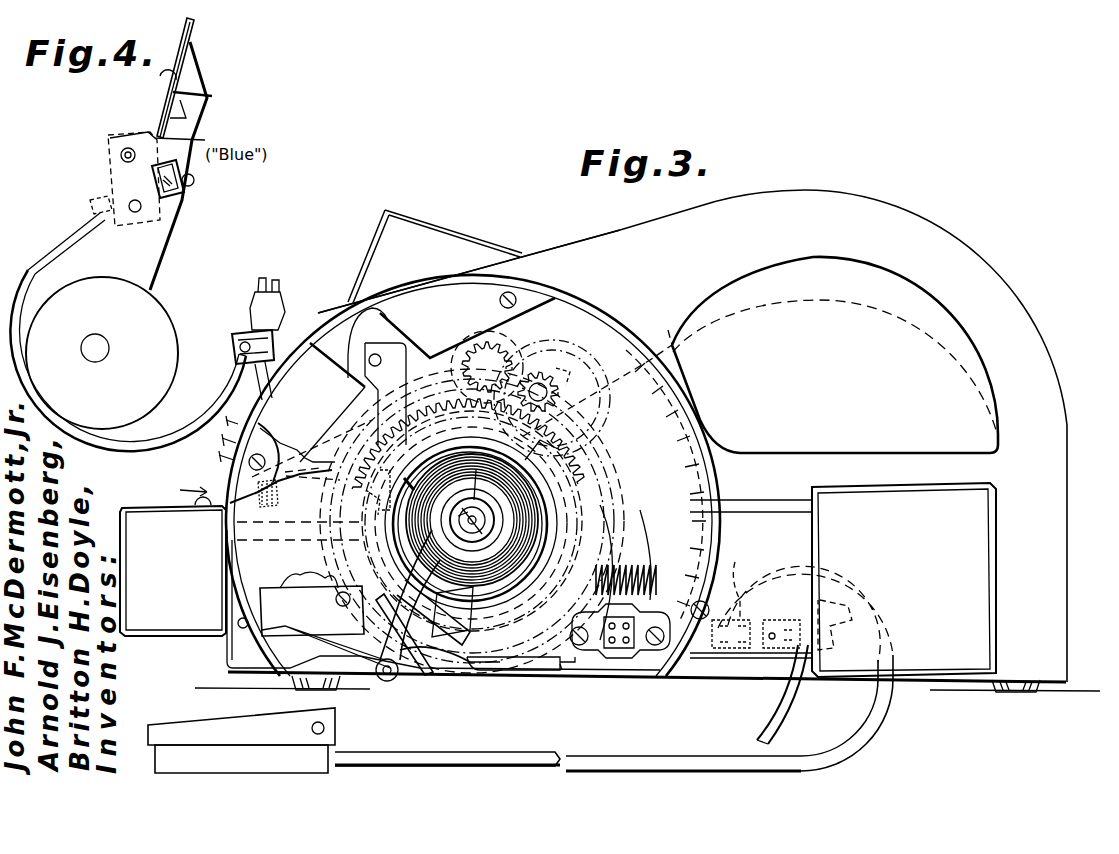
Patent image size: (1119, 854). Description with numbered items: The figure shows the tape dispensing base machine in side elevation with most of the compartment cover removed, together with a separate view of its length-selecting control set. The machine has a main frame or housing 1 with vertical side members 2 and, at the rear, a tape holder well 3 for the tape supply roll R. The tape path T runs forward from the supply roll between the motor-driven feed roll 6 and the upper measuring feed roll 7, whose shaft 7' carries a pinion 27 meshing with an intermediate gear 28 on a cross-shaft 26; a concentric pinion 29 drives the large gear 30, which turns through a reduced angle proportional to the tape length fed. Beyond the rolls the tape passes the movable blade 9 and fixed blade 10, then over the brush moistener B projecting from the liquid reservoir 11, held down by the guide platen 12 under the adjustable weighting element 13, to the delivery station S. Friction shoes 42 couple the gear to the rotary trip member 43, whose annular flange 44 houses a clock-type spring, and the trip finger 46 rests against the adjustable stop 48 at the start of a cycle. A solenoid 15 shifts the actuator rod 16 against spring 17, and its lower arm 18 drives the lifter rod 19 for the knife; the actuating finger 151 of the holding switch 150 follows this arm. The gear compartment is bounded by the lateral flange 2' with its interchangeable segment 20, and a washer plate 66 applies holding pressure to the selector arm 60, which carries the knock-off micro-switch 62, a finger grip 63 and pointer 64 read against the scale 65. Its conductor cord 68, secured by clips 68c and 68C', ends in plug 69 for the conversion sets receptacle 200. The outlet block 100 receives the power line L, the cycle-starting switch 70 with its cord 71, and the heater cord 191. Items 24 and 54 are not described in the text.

In FIG. 3, the main frame or housing 1 is at (1030, 288).
In FIG. 3, the vertical side members 2 is at (474, 256).
In FIG. 3, the tape holder well 3 is at (920, 292).
In FIG. 3, the tape supply roll R is at (850, 316).
In FIG. 3, the compartment-flange segment 20 is at (495, 280).
In FIG. 3, the intermediate gear 28 is at (492, 350).
In FIG. 3, the upper feed roll 7 is at (427, 380).
In FIG. 3, the shaft of upper feed roll 7' is at (416, 368).
In FIG. 3, the pinion 29 is at (530, 380).
In FIG. 3, the cross-shaft 26 is at (548, 382).
In FIG. 3, the tape path T is at (178, 470).
In FIG. 3, the dial scale 54 is at (665, 485).
In FIG. 3, the arcuate scale 65 is at (700, 470).
In FIG. 3, the solenoid 15 is at (898, 492).
In FIG. 4, the length selector arm 60 is at (116, 119).
In FIG. 3, the length selector arm 60 is at (690, 456).
In FIG. 3, the large gear 30 is at (578, 440).
In FIG. 3, the spring-pressed shoes 42 is at (542, 461).
In FIG. 3, the motor-driven feed roll 6 is at (596, 490).
In FIG. 3, the washer plate 66 is at (692, 527).
In FIG. 3, the adjustable weighting element 13 is at (262, 438).
In FIG. 3, the lifter rod 19 is at (385, 400).
In FIG. 3, the movable blade 9 is at (397, 482).
In FIG. 3, the guide platen 12 is at (222, 455).
In FIG. 3, the delivery station S is at (186, 493).
In FIG. 3, the fixed blade 10 is at (384, 507).
In FIG. 3, the brush moistener B is at (262, 512).
In FIG. 3, the rotary trip member 43 is at (537, 537).
In FIG. 3, the annular flange 44 is at (512, 580).
In FIG. 3, the spring 17 is at (622, 564).
In FIG. 3, the cycle-starting switch 70 is at (650, 576).
In FIG. 3, the lateral flange 2' is at (426, 600).
In FIG. 3, the holding switch 150 is at (312, 604).
In FIG. 3, the actuator rod 16 is at (604, 598).
In FIG. 3, the connection cord 71 is at (740, 590).
In FIG. 3, the liquid reservoir 11 is at (166, 618).
In FIG. 3, the screw 24 is at (244, 628).
In FIG. 3, the actuating finger 151 is at (330, 653).
In FIG. 3, the lower arm 18 is at (402, 686).
In FIG. 3, the trip finger 46 is at (433, 640).
In FIG. 3, the adjustable stop 48 is at (480, 673).
In FIG. 3, the conversion sets receptacle 200 is at (610, 655).
In FIG. 3, the outlet block 100 is at (742, 660).
In FIG. 3, the A.C. power line L is at (834, 650).
In FIG. 3, the heater conductor cord 191 is at (773, 712).
In FIG. 3, the pinion 27 is at (468, 515).
In FIG. 4, the finger grip 63 is at (185, 32).
In FIG. 4, the length-selecting pointer 64 is at (172, 96).
In FIG. 4, the knock-off micro-switch 62 is at (106, 138).
In FIG. 4, the flexible conductor cord 68 is at (55, 232).
In FIG. 4, the cord-container clip 68C' is at (191, 191).
In FIG. 4, the prong-type plug 69 is at (250, 312).
In FIG. 4, the clip 68c is at (238, 362).